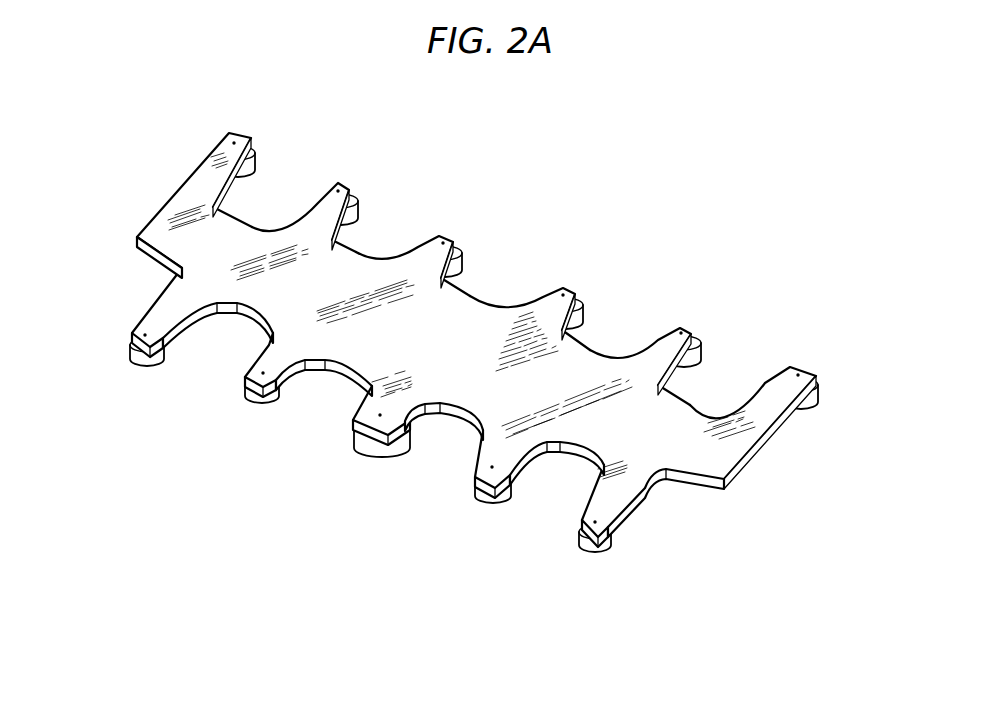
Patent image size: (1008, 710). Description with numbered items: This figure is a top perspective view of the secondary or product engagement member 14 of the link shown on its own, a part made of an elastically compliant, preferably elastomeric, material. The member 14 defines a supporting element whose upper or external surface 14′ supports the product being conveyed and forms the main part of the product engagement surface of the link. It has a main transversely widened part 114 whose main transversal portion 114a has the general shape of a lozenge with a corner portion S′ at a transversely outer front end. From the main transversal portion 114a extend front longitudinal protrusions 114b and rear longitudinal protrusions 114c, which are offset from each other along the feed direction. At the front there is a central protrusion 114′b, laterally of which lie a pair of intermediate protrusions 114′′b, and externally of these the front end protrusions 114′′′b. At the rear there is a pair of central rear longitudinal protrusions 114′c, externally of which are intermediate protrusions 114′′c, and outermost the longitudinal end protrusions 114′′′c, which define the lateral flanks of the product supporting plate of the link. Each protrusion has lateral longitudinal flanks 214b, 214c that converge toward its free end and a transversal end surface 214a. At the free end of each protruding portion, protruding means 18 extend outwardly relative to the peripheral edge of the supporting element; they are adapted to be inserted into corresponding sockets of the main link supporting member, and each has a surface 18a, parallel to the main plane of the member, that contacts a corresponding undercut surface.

The secondary or product engagement member 14 is at (146, 184).
The upper or external surface 14′ is at (488, 312).
The corner portion S′ is at (119, 200).
The main transversely widened part 114 is at (455, 335).
The main transversal portion 114a is at (190, 242).
The front longitudinal protrusions 114b is at (250, 415).
The rear longitudinal protrusions 114c is at (603, 274).
The central front protrusion 114′b is at (393, 417).
The intermediate front protrusions 114′′b is at (243, 357).
The front end protrusions 114′′′b is at (131, 334).
The central rear longitudinal protrusions 114′c is at (444, 226).
The intermediate rear protrusions 114′′c is at (326, 197).
The longitudinal end protrusions 114′′′c is at (232, 132).
The transversal end surface 214a is at (363, 448).
The lateral longitudinal flanks of front protrusions 214b is at (360, 403).
The lateral longitudinal flanks of rear protrusions 214c is at (372, 433).
The protruding means 18 is at (806, 403).
The surface of protruding means 18a is at (815, 390).